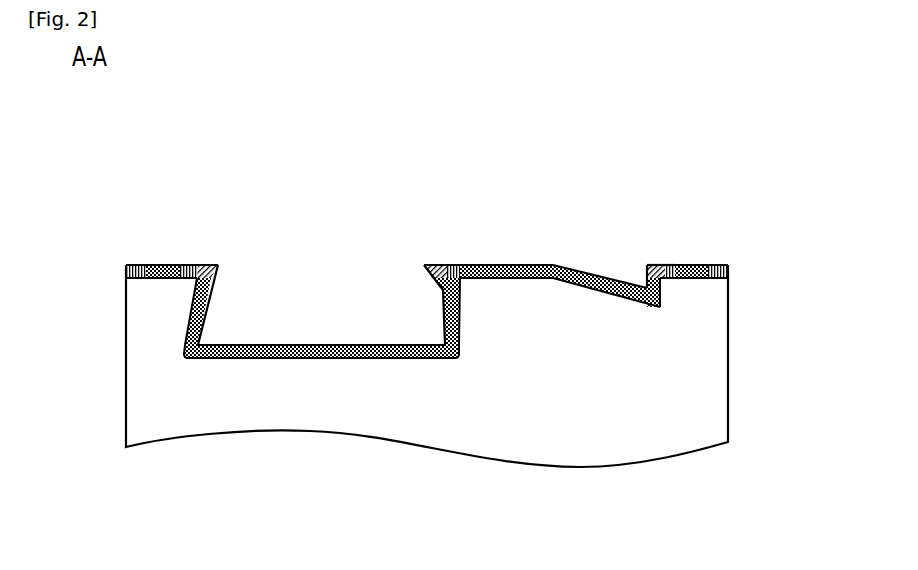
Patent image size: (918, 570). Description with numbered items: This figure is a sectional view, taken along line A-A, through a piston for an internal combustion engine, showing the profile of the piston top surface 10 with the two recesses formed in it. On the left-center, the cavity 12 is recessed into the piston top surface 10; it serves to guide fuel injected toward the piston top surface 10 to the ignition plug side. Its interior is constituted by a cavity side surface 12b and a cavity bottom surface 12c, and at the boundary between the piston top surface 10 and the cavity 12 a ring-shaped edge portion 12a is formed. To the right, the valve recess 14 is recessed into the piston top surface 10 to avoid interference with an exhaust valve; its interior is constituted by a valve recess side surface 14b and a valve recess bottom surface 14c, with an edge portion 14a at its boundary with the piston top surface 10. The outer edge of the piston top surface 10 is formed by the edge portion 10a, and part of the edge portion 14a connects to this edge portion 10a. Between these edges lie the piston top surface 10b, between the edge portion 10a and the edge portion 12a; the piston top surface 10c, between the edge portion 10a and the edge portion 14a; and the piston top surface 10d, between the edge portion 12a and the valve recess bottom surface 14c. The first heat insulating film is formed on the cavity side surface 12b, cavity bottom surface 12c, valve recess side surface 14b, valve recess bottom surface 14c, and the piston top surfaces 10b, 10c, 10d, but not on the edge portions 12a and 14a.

The piston top surface 10 is at (121, 271).
The edge portion 10a is at (137, 263).
The piston top surface 10b is at (172, 263).
The piston top surface 10c is at (695, 263).
The piston top surface 10d is at (517, 263).
The cavity 12 is at (323, 314).
The edge portion 12a is at (205, 263).
The cavity side surface 12b is at (200, 312).
The cavity bottom surface 12c is at (415, 337).
The valve recess 14 is at (603, 262).
The edge portion 14a is at (655, 262).
The valve recess side surface 14b is at (640, 283).
The valve recess bottom surface 14c is at (614, 278).